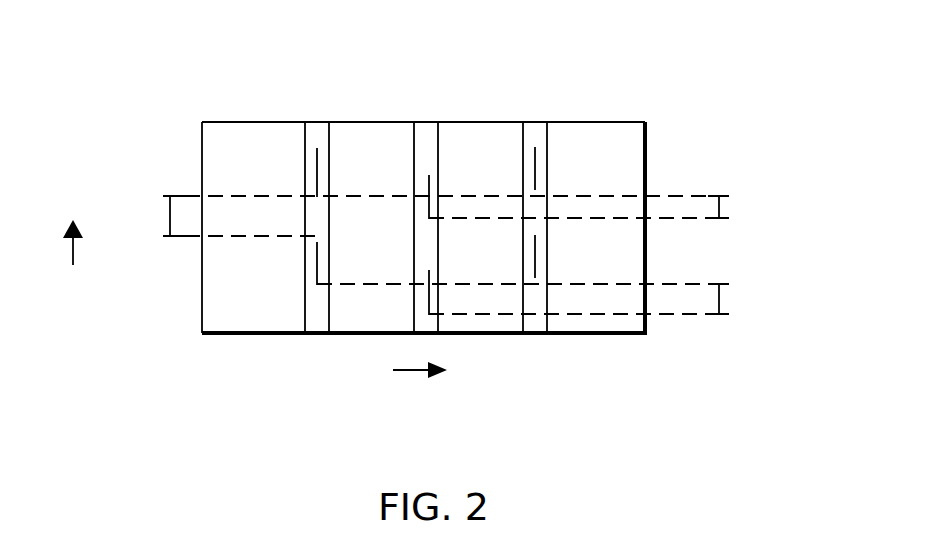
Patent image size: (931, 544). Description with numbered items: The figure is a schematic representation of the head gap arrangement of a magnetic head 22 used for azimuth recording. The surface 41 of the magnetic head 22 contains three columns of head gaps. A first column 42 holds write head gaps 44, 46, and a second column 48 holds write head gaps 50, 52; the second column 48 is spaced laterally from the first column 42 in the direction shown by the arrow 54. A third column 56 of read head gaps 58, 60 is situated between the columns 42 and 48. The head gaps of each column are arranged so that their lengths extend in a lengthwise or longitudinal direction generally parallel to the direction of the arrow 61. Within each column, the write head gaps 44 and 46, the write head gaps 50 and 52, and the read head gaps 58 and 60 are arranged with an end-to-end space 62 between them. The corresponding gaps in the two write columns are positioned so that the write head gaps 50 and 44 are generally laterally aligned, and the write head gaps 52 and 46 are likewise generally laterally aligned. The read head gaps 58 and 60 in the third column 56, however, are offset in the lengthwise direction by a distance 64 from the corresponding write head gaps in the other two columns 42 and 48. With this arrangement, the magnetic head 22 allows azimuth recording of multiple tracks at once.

The magnetic head 22 is at (625, 122).
The surface 41 is at (372, 322).
The first column 42 is at (533, 122).
The write head gap 44 is at (535, 167).
The write head gap 46 is at (535, 252).
The second column 48 is at (318, 122).
The write head gap 50 is at (316, 172).
The write head gap 52 is at (316, 270).
The arrow 54 is at (419, 392).
The third column 56 is at (425, 122).
The read head gap 58 is at (430, 188).
The read head gap 60 is at (430, 283).
The arrow 61 is at (78, 269).
The end-to-end space 62 is at (168, 218).
The distance 64 is at (729, 206).